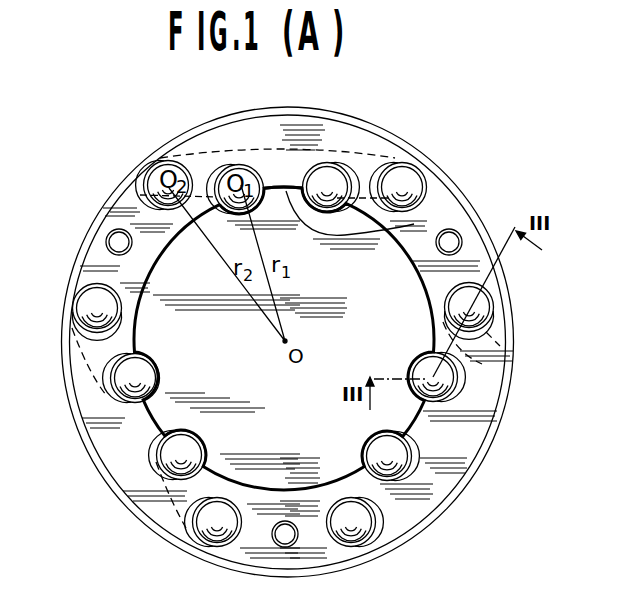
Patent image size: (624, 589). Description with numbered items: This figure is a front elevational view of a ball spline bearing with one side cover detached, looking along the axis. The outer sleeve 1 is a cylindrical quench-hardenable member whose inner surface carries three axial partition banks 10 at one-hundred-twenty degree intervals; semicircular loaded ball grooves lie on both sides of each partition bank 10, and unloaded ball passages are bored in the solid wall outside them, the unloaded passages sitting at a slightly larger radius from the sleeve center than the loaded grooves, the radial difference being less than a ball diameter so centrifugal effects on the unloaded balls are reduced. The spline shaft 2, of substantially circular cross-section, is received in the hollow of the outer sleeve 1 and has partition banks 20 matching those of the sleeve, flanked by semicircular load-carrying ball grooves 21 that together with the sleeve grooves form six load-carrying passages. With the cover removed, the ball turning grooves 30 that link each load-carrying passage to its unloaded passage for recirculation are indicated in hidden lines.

The outer sleeve 1 is at (98, 204).
The spline shaft 2 is at (300, 407).
The partition bank 10 is at (288, 180).
The partition bank 20 is at (417, 225).
The load-carrying ball groove 21 is at (240, 172).
The ball turning groove 30 is at (197, 149).